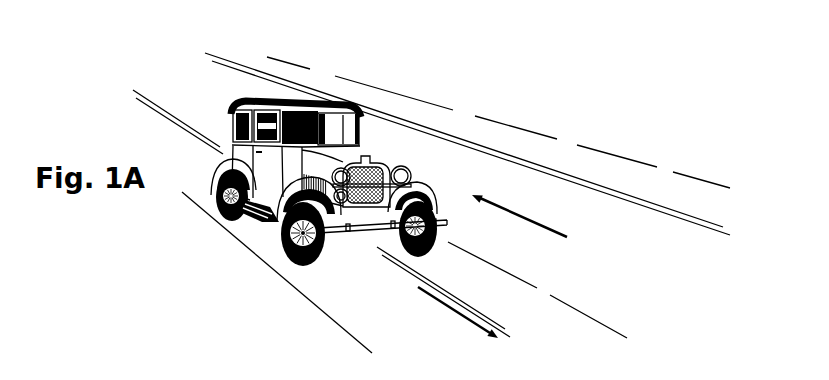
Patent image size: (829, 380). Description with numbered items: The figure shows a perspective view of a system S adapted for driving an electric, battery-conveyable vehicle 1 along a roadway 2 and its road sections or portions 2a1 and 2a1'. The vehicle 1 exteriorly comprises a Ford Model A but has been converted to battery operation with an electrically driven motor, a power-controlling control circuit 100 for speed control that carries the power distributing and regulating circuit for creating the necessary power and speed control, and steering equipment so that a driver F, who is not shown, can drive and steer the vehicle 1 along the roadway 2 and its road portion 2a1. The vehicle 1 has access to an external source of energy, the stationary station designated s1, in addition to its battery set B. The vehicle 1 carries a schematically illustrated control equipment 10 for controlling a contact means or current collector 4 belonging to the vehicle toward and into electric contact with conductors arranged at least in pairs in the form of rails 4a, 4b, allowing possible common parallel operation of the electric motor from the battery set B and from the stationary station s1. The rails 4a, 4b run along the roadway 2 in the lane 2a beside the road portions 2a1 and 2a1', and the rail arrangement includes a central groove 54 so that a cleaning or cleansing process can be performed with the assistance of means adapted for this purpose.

The vehicle 1 is at (298, 156).
The control equipment 10 is at (248, 200).
The roadway 2 is at (373, 292).
The lane 2a is at (531, 363).
The road portion 2a1 is at (458, 317).
The road portion 2a1' is at (467, 144).
The current collector 4 is at (353, 240).
The rail 4a is at (700, 227).
The rail 4b is at (712, 218).
The central groove 54 is at (627, 195).
The control circuit 100 is at (380, 233).
The driver F is at (330, 128).
The battery set B is at (280, 203).
The system S is at (528, 119).
The external source of energy s1 is at (509, 317).